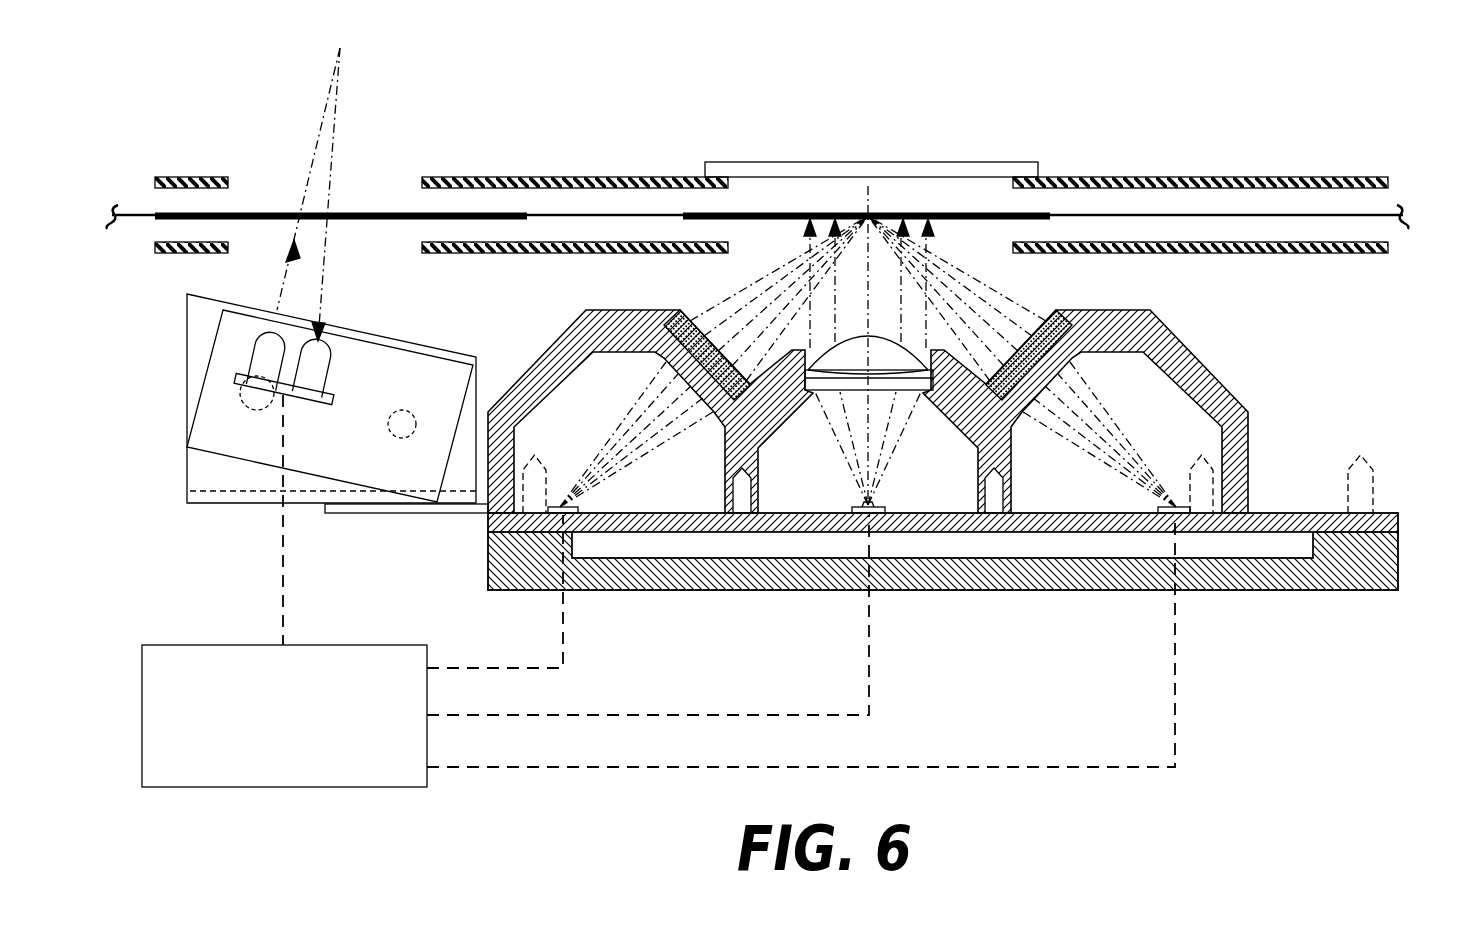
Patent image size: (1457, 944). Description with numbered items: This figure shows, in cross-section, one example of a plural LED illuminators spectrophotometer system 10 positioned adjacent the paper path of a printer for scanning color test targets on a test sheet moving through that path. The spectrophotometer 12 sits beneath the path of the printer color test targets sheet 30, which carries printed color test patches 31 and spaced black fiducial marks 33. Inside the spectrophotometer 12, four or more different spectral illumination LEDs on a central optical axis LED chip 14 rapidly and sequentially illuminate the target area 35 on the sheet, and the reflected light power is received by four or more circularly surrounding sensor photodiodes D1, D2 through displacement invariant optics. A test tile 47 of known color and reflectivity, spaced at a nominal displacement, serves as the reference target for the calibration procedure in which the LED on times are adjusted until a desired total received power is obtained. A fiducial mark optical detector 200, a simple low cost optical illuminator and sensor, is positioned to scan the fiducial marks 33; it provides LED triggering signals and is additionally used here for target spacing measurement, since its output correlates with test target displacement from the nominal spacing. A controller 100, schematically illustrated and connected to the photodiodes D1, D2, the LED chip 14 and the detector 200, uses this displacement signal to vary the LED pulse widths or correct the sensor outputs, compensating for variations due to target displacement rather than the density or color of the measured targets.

The plural LED illuminators spectrophotometer system 10 is at (1330, 393).
The spectrophotometer 12 is at (1200, 358).
The LED chip 14 is at (848, 516).
The printer color test targets sheet 30 is at (1196, 213).
The printed color test patches 31 is at (774, 230).
The fiducial mark 33 is at (395, 226).
The illuminated target area 35 is at (869, 215).
The test tile 47 is at (826, 162).
The controller 100 is at (165, 645).
The fiducial mark optical detector 200 is at (221, 385).
The sensor photodiode D1 is at (556, 516).
The sensor photodiode D2 is at (1182, 516).